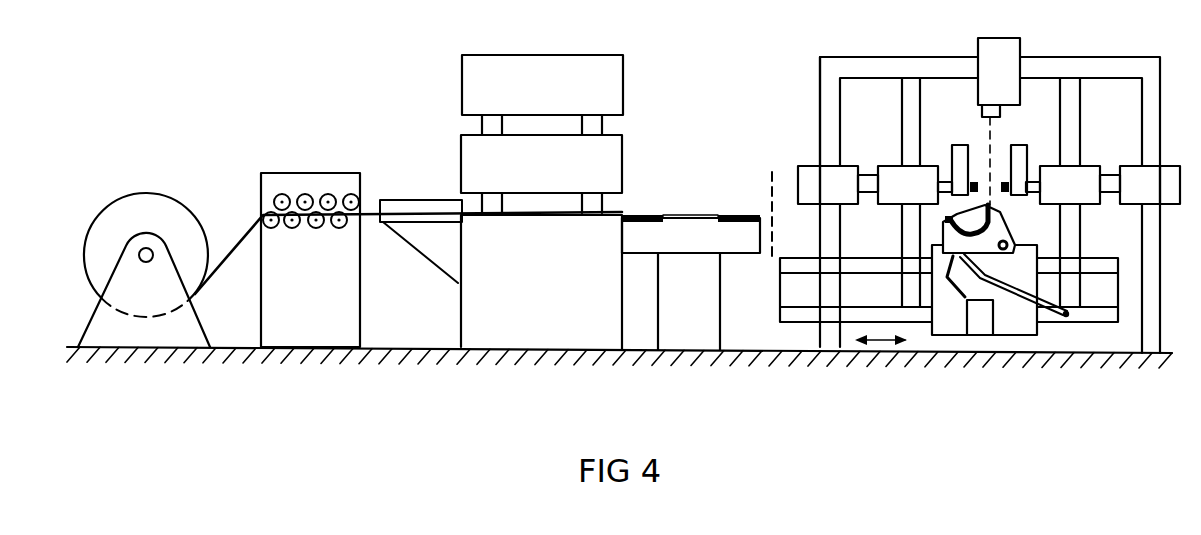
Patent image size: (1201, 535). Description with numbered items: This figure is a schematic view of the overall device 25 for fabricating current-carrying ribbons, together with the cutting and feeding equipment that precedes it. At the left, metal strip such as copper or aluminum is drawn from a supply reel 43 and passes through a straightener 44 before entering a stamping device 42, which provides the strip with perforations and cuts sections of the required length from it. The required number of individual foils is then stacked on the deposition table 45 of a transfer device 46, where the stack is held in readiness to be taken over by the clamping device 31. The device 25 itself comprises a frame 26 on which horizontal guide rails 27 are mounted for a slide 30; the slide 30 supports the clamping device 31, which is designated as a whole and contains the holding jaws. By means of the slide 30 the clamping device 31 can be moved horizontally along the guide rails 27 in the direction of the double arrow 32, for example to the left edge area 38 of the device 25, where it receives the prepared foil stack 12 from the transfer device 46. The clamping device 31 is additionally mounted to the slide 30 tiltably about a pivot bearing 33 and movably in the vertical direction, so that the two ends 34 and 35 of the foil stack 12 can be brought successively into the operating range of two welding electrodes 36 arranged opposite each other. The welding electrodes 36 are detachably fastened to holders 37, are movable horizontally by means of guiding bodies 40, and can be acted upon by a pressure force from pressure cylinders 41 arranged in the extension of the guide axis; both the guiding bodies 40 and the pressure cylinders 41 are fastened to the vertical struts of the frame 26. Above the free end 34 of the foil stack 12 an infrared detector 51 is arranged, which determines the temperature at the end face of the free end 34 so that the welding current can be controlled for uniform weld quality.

The foil stack 12 is at (968, 238).
The device 25 is at (872, 57).
The frame 26 is at (827, 82).
The horizontal guide rails 27 is at (783, 313).
The slide 30 is at (1025, 323).
The clamping device 31 is at (1016, 229).
The double arrow 32 is at (882, 342).
The pivot bearing 33 is at (1012, 250).
The end of foil stack 34 is at (995, 217).
The end of foil stack 35 is at (943, 222).
The welding electrodes 36 is at (975, 183).
The holders 37 is at (958, 160).
The left edge area 38 is at (772, 174).
The guiding bodies 40 is at (893, 170).
The pressure cylinders 41 is at (812, 170).
The stamping device 42 is at (537, 55).
The supply reel 43 is at (146, 193).
The straightener 44 is at (311, 173).
The deposition table 45 is at (704, 220).
The transfer device 46 is at (680, 216).
The infrared detector 51 is at (1000, 43).